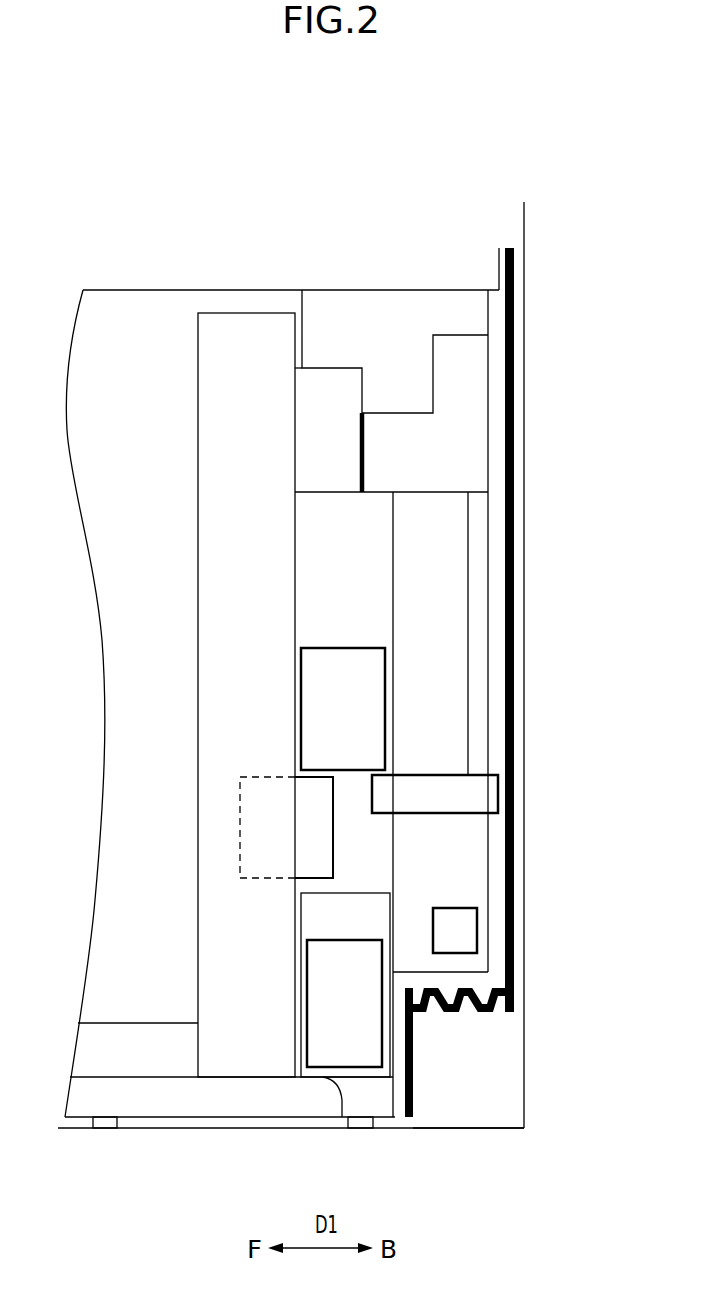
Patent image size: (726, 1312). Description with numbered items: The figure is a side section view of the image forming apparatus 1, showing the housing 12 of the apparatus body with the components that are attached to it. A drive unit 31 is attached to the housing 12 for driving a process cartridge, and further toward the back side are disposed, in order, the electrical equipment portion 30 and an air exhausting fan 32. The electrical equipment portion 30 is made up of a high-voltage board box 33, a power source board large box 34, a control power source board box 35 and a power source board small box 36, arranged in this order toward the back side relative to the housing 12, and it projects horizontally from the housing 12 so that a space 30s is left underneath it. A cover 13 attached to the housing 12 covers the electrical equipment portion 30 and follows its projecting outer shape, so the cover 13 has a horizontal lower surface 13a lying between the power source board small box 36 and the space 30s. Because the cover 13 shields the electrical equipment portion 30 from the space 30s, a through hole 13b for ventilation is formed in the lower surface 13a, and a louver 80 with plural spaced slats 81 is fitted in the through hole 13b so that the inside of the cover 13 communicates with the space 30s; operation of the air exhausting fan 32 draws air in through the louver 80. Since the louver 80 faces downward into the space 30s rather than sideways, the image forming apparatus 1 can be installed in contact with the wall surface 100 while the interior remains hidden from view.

The image forming apparatus 1 is at (314, 214).
The wall surface 100 is at (524, 216).
The housing 12 is at (239, 323).
The cover 13 is at (515, 718).
The lower surface 13a is at (425, 1032).
The through hole 13b is at (508, 1005).
The electrical equipment portion 30 is at (326, 612).
The space 30s is at (466, 1096).
The drive unit 31 is at (258, 880).
The air exhausting fan 32 is at (475, 427).
The high-voltage board box 33 is at (332, 1060).
The power source board large box 34 is at (310, 713).
The control power source board box 35 is at (457, 618).
The power source board small box 36 is at (478, 883).
The louver 80 is at (474, 1032).
The slats 81 is at (428, 988).